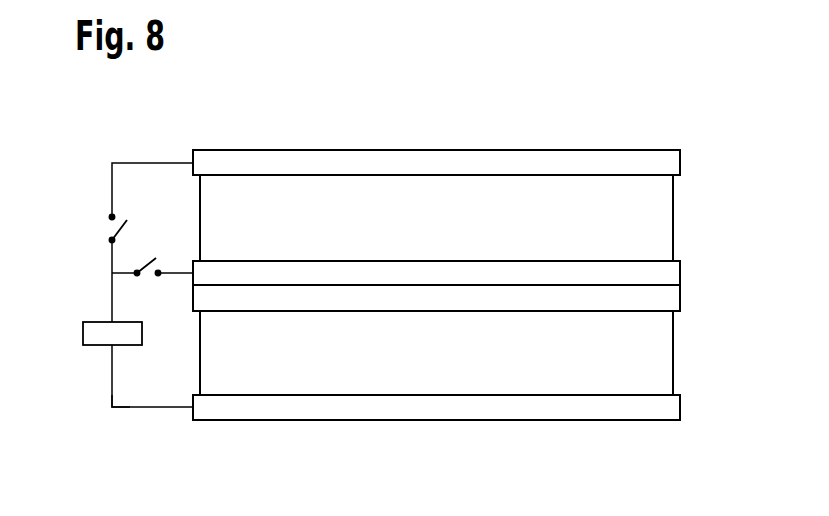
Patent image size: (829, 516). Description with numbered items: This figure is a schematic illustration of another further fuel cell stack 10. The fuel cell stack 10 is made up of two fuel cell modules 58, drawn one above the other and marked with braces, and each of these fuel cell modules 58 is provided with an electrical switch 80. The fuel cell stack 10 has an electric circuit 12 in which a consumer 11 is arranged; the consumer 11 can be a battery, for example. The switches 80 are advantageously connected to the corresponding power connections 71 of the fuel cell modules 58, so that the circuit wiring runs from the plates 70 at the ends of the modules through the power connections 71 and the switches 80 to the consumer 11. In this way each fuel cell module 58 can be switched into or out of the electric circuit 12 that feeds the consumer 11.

The fuel cell stack 10 is at (648, 95).
The consumer 11 is at (97, 333).
The electric circuit 12 is at (122, 410).
The fuel cell module 58 is at (748, 420).
The power connection plate 70 is at (655, 164).
The power connection 71 is at (150, 163).
The electrical switch 80 is at (147, 262).